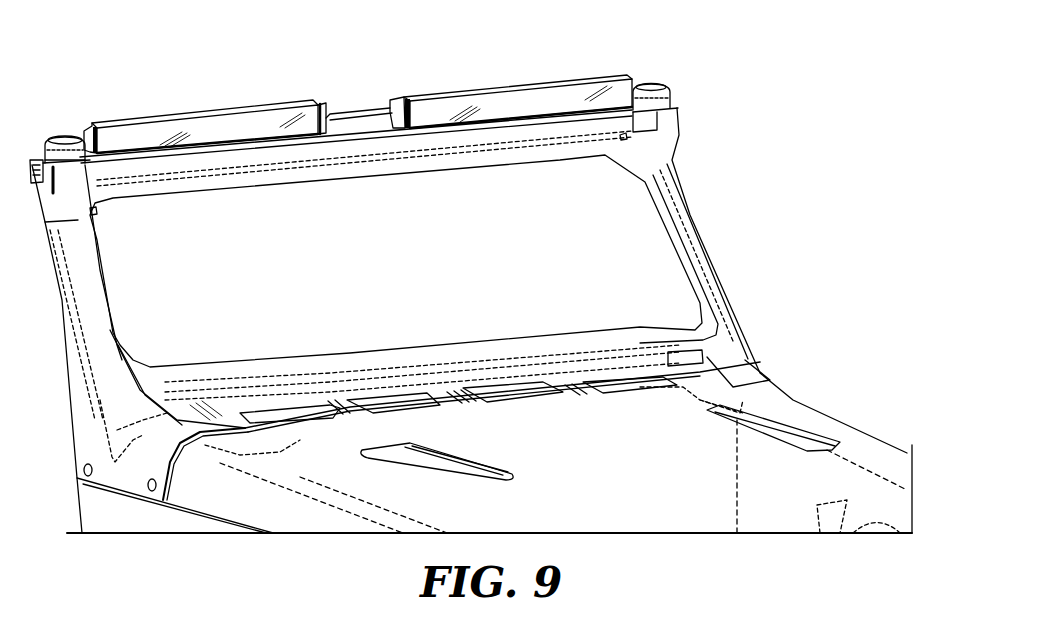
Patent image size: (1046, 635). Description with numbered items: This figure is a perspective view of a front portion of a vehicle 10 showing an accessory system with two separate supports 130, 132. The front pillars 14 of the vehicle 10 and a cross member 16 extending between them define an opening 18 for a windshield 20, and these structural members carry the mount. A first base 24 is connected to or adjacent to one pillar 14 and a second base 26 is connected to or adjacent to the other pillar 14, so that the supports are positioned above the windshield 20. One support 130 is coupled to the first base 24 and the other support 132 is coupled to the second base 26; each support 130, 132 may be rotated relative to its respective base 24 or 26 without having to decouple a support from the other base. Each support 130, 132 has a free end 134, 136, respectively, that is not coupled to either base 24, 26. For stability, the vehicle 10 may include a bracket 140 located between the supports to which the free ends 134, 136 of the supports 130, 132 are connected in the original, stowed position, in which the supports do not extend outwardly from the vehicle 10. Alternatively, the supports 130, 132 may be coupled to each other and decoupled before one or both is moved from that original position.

The vehicle 10 is at (757, 150).
The front pillar 14 is at (70, 310).
The cross member 16 is at (170, 185).
The opening 18 is at (115, 327).
The windshield 20 is at (170, 343).
The first base 24 is at (60, 116).
The second base 26 is at (676, 82).
The support 130 is at (230, 103).
The support 132 is at (538, 80).
The free end 134 is at (328, 117).
The free end 136 is at (398, 110).
The bracket 140 is at (368, 118).